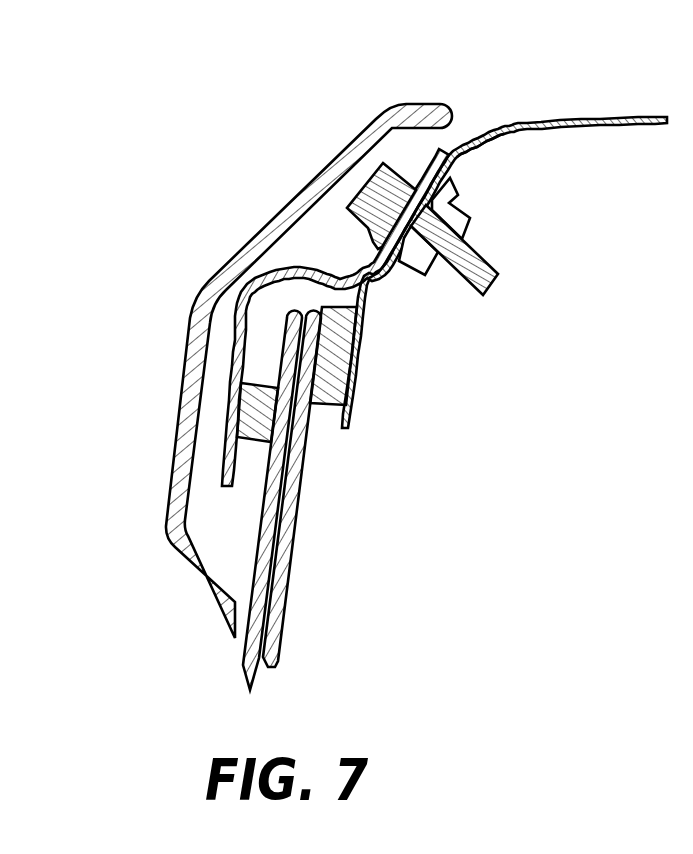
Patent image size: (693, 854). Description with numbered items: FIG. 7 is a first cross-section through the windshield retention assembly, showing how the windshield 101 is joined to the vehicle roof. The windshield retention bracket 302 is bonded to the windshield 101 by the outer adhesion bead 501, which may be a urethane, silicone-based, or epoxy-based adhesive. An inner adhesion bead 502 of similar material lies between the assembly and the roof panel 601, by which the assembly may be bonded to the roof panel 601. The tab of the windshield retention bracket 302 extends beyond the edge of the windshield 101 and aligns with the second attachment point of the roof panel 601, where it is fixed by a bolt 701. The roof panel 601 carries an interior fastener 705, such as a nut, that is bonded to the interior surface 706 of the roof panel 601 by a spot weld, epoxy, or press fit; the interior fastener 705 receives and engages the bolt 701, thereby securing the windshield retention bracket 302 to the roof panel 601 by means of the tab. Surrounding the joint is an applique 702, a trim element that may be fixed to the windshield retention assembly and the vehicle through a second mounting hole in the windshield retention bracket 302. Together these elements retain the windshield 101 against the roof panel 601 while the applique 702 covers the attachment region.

The windshield 101 is at (283, 640).
The windshield retention bracket 302 is at (265, 282).
The outer adhesion bead 501 is at (255, 412).
The inner adhesion bead 502 is at (335, 360).
The roof panel 601 is at (529, 122).
The bolt 701 is at (475, 249).
The applique 702 is at (193, 313).
The interior fastener 705 is at (455, 192).
The interior surface 706 is at (504, 146).